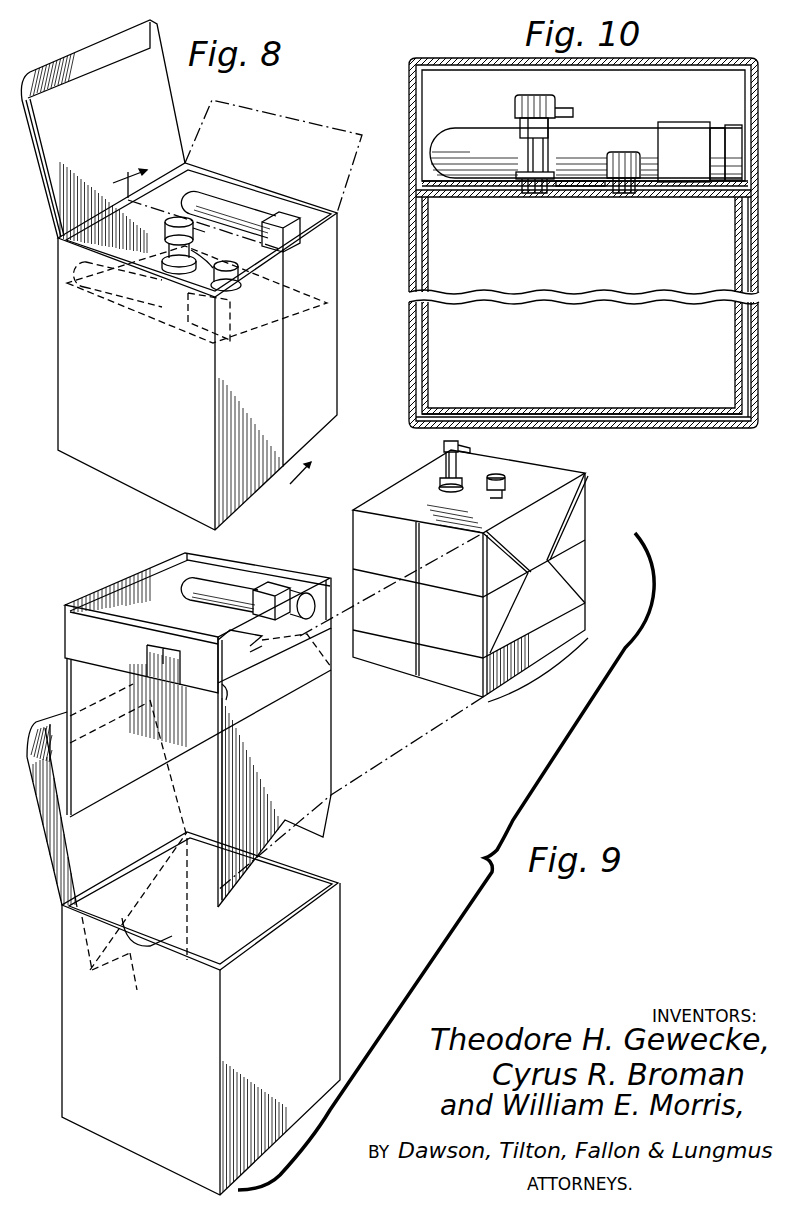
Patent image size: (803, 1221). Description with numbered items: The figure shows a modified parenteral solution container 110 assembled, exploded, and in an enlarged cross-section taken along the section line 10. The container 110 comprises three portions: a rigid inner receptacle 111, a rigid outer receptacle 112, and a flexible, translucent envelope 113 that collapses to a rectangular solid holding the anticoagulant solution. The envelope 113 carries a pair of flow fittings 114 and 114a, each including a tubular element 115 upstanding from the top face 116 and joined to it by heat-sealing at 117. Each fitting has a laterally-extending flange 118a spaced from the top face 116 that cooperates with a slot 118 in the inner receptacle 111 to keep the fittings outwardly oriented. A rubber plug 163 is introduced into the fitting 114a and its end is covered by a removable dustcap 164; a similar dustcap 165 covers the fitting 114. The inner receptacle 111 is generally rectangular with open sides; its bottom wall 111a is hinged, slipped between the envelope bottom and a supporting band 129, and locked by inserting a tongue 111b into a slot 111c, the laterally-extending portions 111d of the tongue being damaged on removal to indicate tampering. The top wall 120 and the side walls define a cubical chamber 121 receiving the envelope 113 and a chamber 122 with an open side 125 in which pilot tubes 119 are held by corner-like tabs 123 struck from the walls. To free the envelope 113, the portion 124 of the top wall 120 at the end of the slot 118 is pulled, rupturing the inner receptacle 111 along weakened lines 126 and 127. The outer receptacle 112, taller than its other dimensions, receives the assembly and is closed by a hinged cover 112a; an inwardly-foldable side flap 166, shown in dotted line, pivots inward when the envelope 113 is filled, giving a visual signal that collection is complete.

In FIG. 8, the section line 10— 10 is at (223, 328).
In FIG. 8, the parenteral solution container 110 is at (339, 333).
In FIG. 10, the inner receptacle 111 is at (447, 195).
In FIG. 9, the inner receptacle 111 is at (320, 722).
In FIG. 10, the bottom wall 111a is at (673, 430).
In FIG. 9, the bottom wall 111a is at (62, 903).
In FIG. 9, the tongue 111b is at (128, 978).
In FIG. 9, the slot 111c is at (283, 825).
In FIG. 9, the laterally-extending portions 111d is at (168, 935).
In FIG. 8, the outer receptacle 112 is at (326, 389).
In FIG. 10, the outer receptacle 112 is at (727, 430).
In FIG. 9, the outer receptacle 112 is at (338, 940).
In FIG. 9, the hinged cover 112a is at (52, 732).
In FIG. 10, the envelope 113 is at (573, 407).
In FIG. 9, the envelope 113 is at (588, 549).
In FIG. 10, the flow fitting 114 is at (620, 195).
In FIG. 9, the flow fitting 114 is at (500, 478).
In FIG. 10, the flow fitting 114a is at (528, 156).
In FIG. 9, the flow fitting 114a is at (458, 472).
In FIG. 10, the tubular element 115 is at (528, 195).
In FIG. 10, the top face 116 is at (483, 196).
In FIG. 10, the heat seal 117 is at (550, 184).
In FIG. 8, the slot 118 is at (206, 265).
In FIG. 10, the slot 118 is at (578, 182).
In FIG. 9, the slot 118 is at (230, 640).
In FIG. 9, the laterally-extending flange 118a is at (442, 470).
In FIG. 8, the pilot tubes 119 is at (246, 208).
In FIG. 10, the pilot tubes 119 is at (580, 126).
In FIG. 9, the pilot tubes 119 is at (227, 583).
In FIG. 9, the top wall 120 is at (168, 612).
In FIG. 9, the chamber 121 is at (72, 674).
In FIG. 9, the chamber 122 is at (198, 562).
In FIG. 8, the corner-like tabs 123 is at (284, 222).
In FIG. 10, the corner-like tabs 123 is at (686, 125).
In FIG. 9, the corner-like tabs 123 is at (276, 582).
In FIG. 9, the portion of top wall 124 is at (258, 656).
In FIG. 9, the open side 125 is at (316, 592).
In FIG. 9, the weakened line 126 is at (312, 640).
In FIG. 9, the weakened line 127 is at (228, 686).
In FIG. 10, the supporting band 129 is at (640, 430).
In FIG. 9, the supporting band 129 is at (520, 688).
In FIG. 10, the rubber plug 163 is at (516, 122).
In FIG. 8, the dustcap 164 is at (176, 217).
In FIG. 10, the dustcap 164 is at (533, 98).
In FIG. 10, the dustcap 165 is at (622, 152).
In FIG. 8, the side flap 166 is at (321, 126).